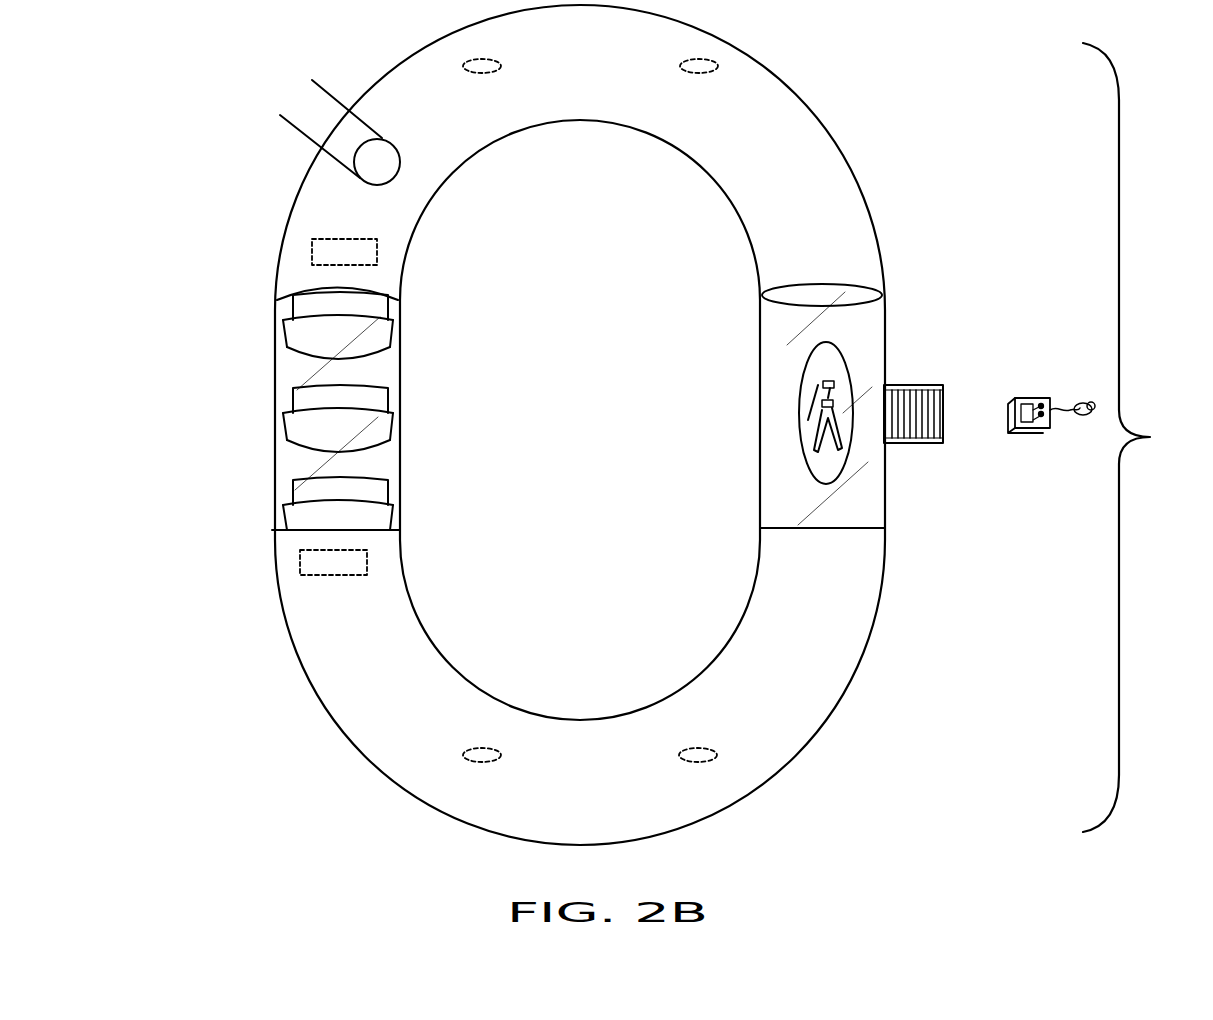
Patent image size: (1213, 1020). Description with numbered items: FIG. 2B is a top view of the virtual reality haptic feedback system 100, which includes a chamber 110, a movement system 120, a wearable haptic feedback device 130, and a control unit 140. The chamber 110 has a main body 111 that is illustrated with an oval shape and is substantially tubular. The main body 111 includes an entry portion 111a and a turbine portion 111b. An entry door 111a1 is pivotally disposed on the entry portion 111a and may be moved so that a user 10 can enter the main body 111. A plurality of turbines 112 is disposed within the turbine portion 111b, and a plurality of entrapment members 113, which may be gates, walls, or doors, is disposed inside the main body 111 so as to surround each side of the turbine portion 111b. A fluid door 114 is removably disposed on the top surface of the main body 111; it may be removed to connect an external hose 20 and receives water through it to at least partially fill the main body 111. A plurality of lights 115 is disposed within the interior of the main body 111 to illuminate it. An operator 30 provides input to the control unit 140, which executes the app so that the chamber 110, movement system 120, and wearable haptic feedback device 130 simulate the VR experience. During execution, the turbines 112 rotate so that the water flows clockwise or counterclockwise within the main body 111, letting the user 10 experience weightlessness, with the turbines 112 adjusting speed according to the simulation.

The virtual reality haptic feedback system 100 is at (212, 103).
The chamber 110 is at (1146, 437).
The main body 111 is at (380, 743).
The entry portion 111a is at (875, 310).
The entry door 111a1 is at (840, 355).
The turbine portion 111b is at (290, 302).
The turbines 112 is at (313, 335).
The entrapment members 113 is at (313, 250).
The fluid door 114 is at (380, 160).
The lights 115 is at (470, 66).
The movement system 120 is at (815, 393).
The wearable haptic feedback device 130 is at (805, 420).
The control unit 140 is at (1042, 432).
The user 10 is at (843, 440).
The external hose 20 is at (310, 125).
The operator 30 is at (1076, 400).